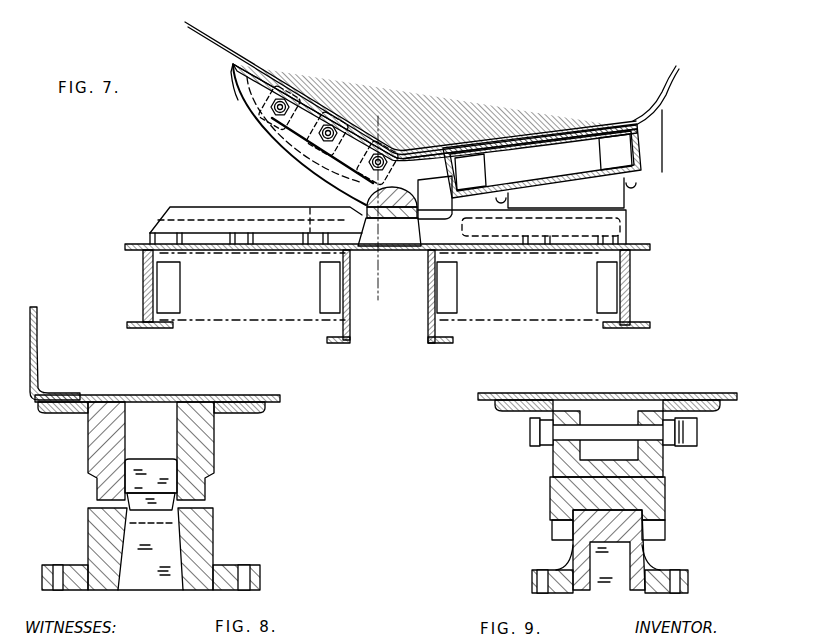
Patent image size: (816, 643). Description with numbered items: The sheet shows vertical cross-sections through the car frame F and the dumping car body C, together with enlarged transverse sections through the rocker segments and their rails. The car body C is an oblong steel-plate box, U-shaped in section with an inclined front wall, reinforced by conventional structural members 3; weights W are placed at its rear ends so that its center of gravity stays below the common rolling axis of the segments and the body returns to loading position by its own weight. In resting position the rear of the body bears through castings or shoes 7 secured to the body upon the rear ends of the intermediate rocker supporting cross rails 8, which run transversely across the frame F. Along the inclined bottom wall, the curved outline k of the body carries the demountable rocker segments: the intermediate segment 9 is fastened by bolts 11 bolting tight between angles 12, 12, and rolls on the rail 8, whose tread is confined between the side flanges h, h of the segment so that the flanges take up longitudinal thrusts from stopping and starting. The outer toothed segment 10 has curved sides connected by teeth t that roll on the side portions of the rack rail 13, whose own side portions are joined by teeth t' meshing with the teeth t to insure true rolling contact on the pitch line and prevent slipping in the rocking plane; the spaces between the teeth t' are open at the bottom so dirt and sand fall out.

In FIG. 7, the dumping car body C is at (680, 68).
In FIG. 8, the dumping car body C is at (38, 322).
In FIG. 7, the weights W is at (666, 113).
In FIG. 7, the car frame F is at (143, 282).
In FIG. 7, the curved arm k is at (273, 132).
In FIG. 7, the structural members 3 is at (642, 160).
In FIG. 7, the shoes 7 is at (626, 198).
In FIG. 7, the rocker supporting cross rails 8 is at (192, 215).
In FIG. 9, the rocker supporting cross rails 8 is at (652, 547).
In FIG. 7, the rocker segments 9 is at (270, 108).
In FIG. 9, the rocker segments 9 is at (553, 478).
In FIG. 8, the toothed rocker segments 10 is at (100, 484).
In FIG. 7, the bolts 11 is at (292, 96).
In FIG. 9, the bolts 11 is at (604, 428).
In FIG. 7, the angles 12 is at (322, 113).
In FIG. 9, the angles 12 is at (548, 450).
In FIG. 8, the rack rails 13 is at (214, 523).
In FIG. 9, the side flanges h is at (567, 525).
In FIG. 8, the teeth t is at (151, 462).
In FIG. 8, the teeth t' is at (155, 565).